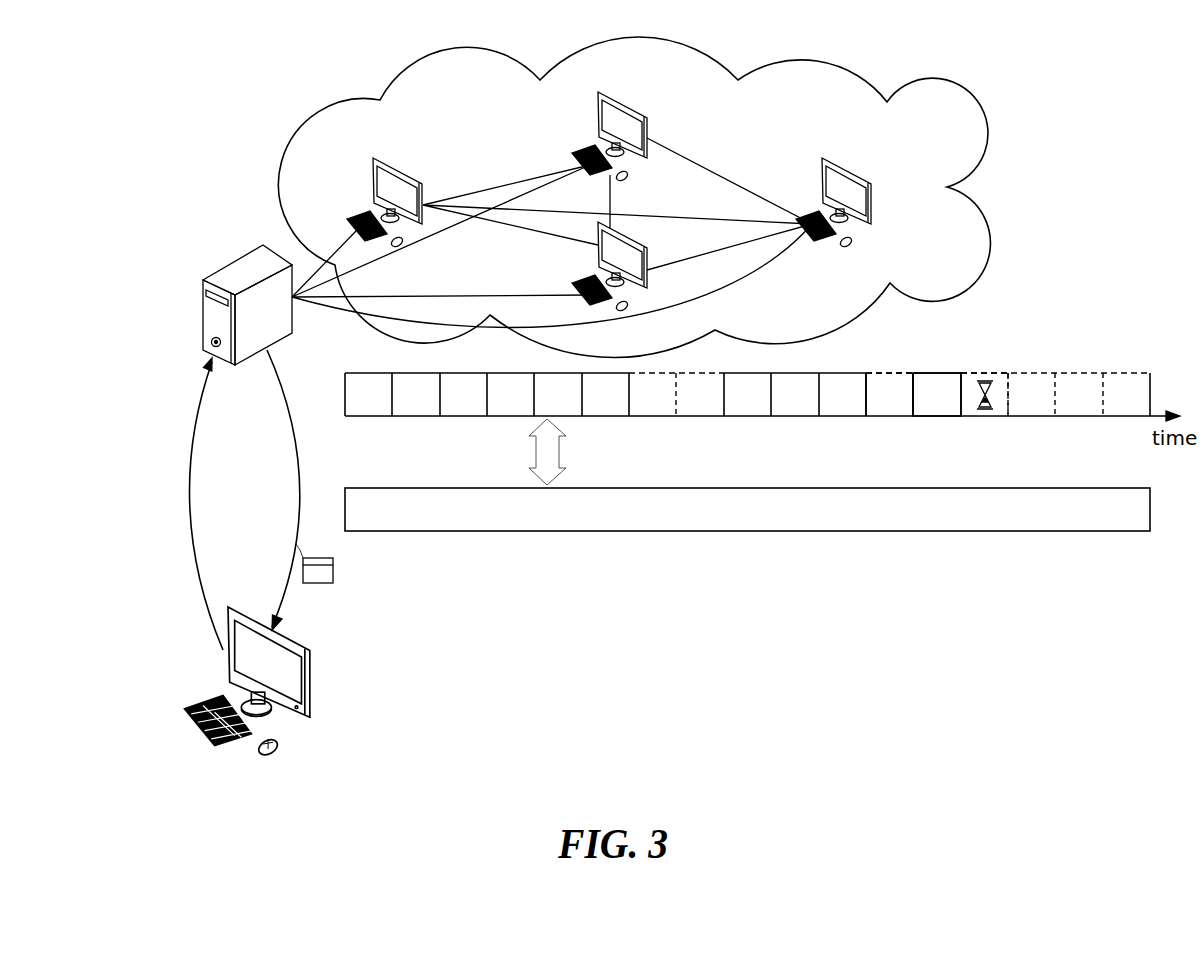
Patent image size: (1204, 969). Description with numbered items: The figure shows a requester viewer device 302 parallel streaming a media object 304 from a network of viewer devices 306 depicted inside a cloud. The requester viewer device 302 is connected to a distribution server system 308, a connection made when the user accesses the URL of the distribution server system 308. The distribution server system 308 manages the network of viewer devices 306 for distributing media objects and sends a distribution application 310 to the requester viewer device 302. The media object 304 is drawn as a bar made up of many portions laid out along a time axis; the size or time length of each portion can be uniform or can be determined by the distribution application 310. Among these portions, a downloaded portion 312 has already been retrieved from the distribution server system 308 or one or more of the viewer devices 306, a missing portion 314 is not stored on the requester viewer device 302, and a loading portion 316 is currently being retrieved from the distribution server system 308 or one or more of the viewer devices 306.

The requester viewer device 302 is at (230, 673).
The media object 304 is at (463, 532).
The network of viewer devices 306 is at (358, 97).
The distribution server system 308 is at (207, 277).
The distribution application 310 is at (333, 585).
The downloaded portion 312 is at (935, 372).
The missing portion 314 is at (889, 372).
The loading portion 316 is at (993, 372).